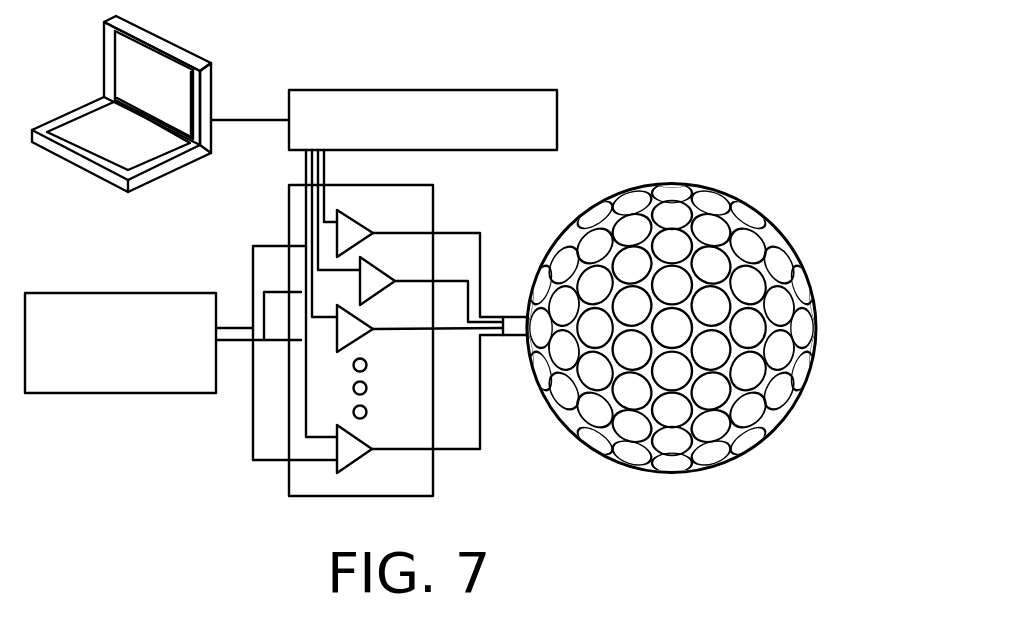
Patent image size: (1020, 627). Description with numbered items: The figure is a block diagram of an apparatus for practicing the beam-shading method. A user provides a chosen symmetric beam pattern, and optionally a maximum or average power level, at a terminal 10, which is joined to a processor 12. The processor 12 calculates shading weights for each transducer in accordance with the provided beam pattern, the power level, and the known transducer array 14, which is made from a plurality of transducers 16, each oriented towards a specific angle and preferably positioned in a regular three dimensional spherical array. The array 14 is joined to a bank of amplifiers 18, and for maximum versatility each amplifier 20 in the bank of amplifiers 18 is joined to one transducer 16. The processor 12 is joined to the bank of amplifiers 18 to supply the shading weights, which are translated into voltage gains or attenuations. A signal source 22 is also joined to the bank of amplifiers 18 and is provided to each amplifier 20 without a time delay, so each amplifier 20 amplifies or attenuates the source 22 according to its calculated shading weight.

The terminal 10 is at (180, 52).
The processor 12 is at (557, 90).
The transducer array 14 is at (766, 172).
The transducer 16 is at (800, 282).
The bank of amplifiers 18 is at (370, 365).
The amplifier 20 is at (345, 462).
The signal source 22 is at (112, 292).